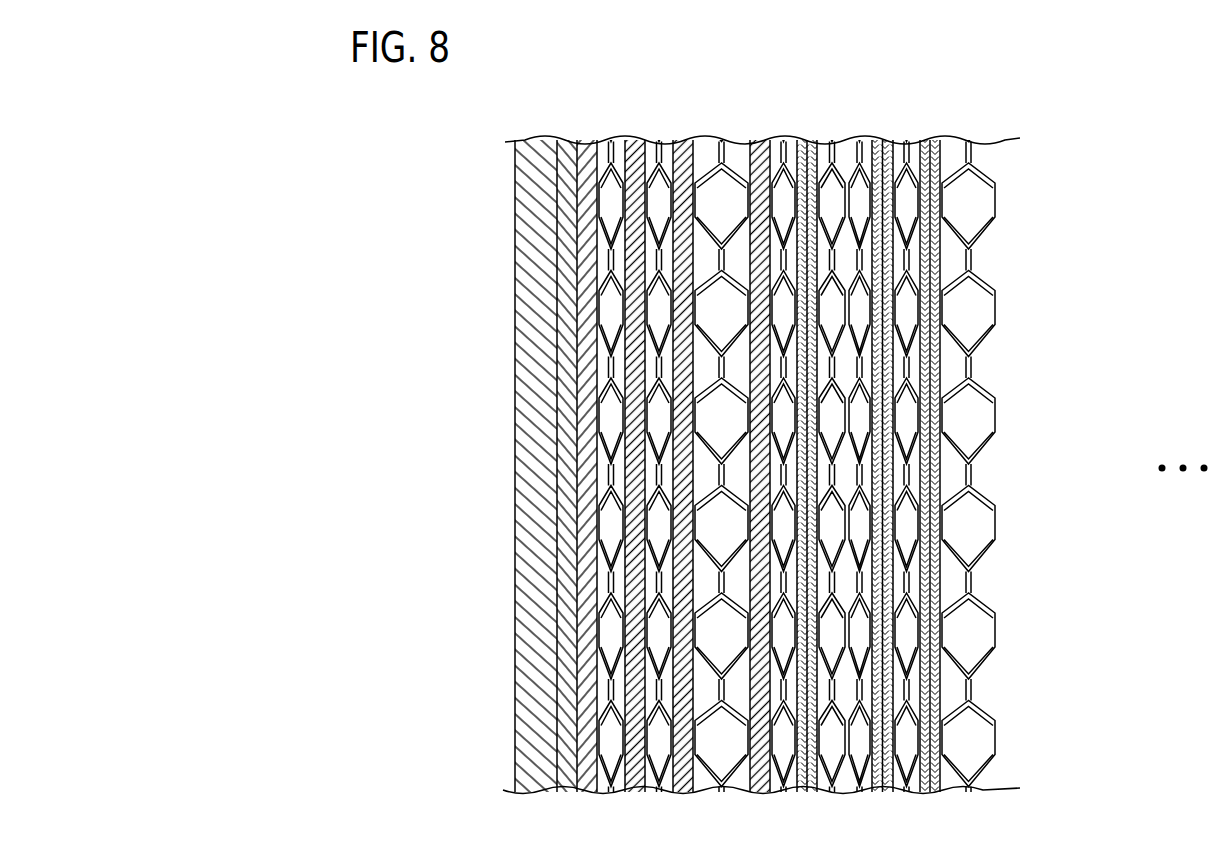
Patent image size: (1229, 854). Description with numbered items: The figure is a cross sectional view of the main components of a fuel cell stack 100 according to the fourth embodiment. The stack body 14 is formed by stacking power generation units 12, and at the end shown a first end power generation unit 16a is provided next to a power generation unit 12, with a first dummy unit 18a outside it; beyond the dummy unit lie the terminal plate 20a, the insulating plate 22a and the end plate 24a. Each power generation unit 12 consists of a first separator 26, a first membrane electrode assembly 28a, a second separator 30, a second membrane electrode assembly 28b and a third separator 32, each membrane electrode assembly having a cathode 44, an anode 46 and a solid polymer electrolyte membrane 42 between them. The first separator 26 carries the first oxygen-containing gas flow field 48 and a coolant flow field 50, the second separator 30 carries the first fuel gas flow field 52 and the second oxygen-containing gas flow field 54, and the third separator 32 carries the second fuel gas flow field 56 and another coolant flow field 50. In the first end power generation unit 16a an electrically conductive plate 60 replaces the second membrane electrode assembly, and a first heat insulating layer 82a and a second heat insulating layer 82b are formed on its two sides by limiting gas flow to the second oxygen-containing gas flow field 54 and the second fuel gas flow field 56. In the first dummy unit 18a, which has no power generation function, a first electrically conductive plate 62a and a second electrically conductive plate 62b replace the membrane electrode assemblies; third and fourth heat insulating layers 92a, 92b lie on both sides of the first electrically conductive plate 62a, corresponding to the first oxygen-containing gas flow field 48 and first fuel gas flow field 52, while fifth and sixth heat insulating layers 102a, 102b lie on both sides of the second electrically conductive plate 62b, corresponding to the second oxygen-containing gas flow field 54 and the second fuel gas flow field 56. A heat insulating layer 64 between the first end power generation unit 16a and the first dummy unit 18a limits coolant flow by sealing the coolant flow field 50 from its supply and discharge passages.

The fuel cell stack 100 is at (425, 131).
The stack body 14 is at (1037, 95).
The first dummy unit 18a is at (715, 57).
The first end power generation unit 16a is at (835, 57).
The power generation unit 12 is at (970, 57).
The second electrically conductive plate 62b is at (630, 142).
The first electrically conductive plate 62a is at (680, 142).
The electrically conductive plate 60 is at (753, 142).
The first membrane electrode assembly 28a is at (808, 131).
The second membrane electrode assembly 28b is at (881, 133).
The third separator 32 is at (607, 157).
The second separator 30 is at (661, 157).
The first separator 26 is at (705, 157).
The end plate 24a is at (512, 222).
The insulating plate 22a is at (566, 345).
The terminal plate 20a is at (585, 382).
The coolant flow field 50 is at (967, 203).
The first oxygen-containing gas flow field 48 is at (947, 252).
The first fuel gas flow field 52 is at (910, 265).
The second oxygen-containing gas flow field 54 is at (905, 403).
The second fuel gas flow field 56 is at (865, 410).
The cathode 44 is at (940, 480).
The solid polymer electrolyte membrane 42 is at (950, 497).
The anode 46 is at (950, 537).
The second heat insulating layer 82b is at (743, 467).
The first heat insulating layer 82a is at (735, 506).
The fourth heat insulating layer 92b is at (663, 568).
The third heat insulating layer 92a is at (707, 574).
The sixth heat insulating layer 102b is at (657, 637).
The fifth heat insulating layer 102a is at (630, 657).
The heat insulating layer 64 is at (720, 737).